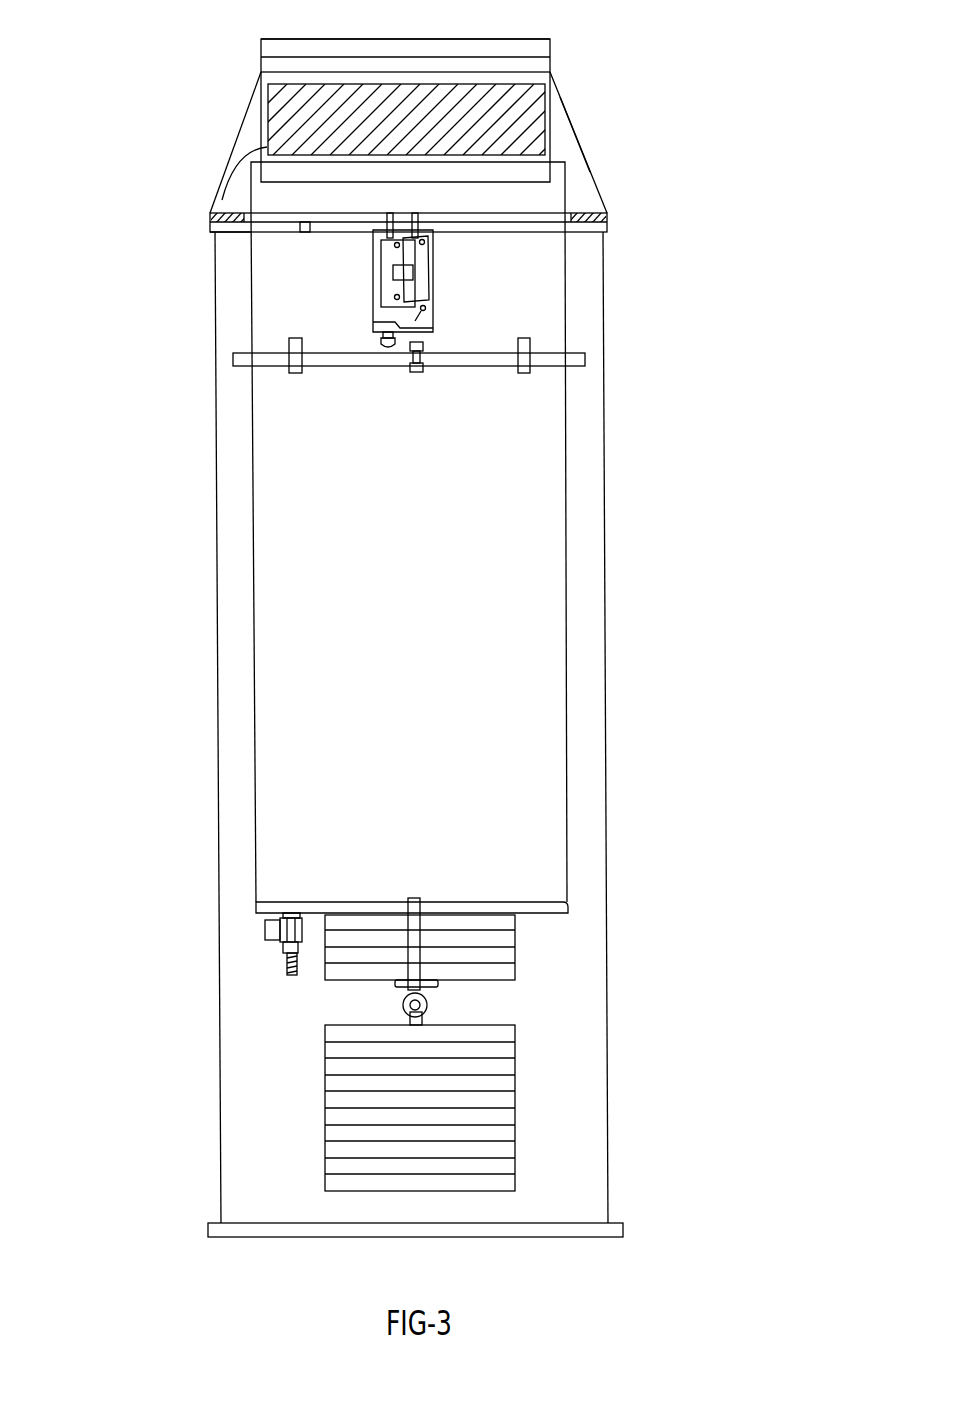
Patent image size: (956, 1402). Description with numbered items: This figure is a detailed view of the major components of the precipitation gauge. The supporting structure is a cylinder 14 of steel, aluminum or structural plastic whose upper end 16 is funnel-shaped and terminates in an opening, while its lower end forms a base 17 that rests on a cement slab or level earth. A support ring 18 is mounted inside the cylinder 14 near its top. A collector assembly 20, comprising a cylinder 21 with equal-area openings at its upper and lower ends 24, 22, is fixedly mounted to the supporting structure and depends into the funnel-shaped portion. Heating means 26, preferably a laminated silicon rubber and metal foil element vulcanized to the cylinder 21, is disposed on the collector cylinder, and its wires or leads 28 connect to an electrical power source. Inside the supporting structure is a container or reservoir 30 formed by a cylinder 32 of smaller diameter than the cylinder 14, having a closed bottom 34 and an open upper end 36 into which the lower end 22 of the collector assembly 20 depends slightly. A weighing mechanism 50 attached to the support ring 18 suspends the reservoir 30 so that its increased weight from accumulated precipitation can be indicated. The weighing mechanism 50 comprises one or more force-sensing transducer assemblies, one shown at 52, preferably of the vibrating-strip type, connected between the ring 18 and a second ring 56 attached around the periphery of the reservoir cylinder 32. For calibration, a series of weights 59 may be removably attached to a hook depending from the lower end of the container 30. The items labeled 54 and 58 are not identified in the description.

The cylinder 14 is at (606, 553).
The upper end 16 is at (583, 148).
The base 17 is at (565, 1228).
The support ring 18 is at (283, 223).
The collector assembly 20 is at (552, 117).
The cylinder 21 is at (261, 50).
The lower end 22 is at (533, 222).
The upper end 24 is at (530, 47).
The heating means 26 is at (290, 107).
The wires or leads 28 is at (264, 148).
The container or reservoir 30 is at (567, 693).
The cylinder 32 is at (420, 616).
The closed bottom 34 is at (542, 905).
The open upper end 36 is at (537, 173).
The weighing mechanism 50 is at (175, 348).
The force-sensing transducer assembly 52 is at (433, 295).
The seal 54 is at (531, 224).
The second ring 56 is at (478, 360).
The upper weight 58 is at (372, 955).
The weights 59 is at (347, 1083).